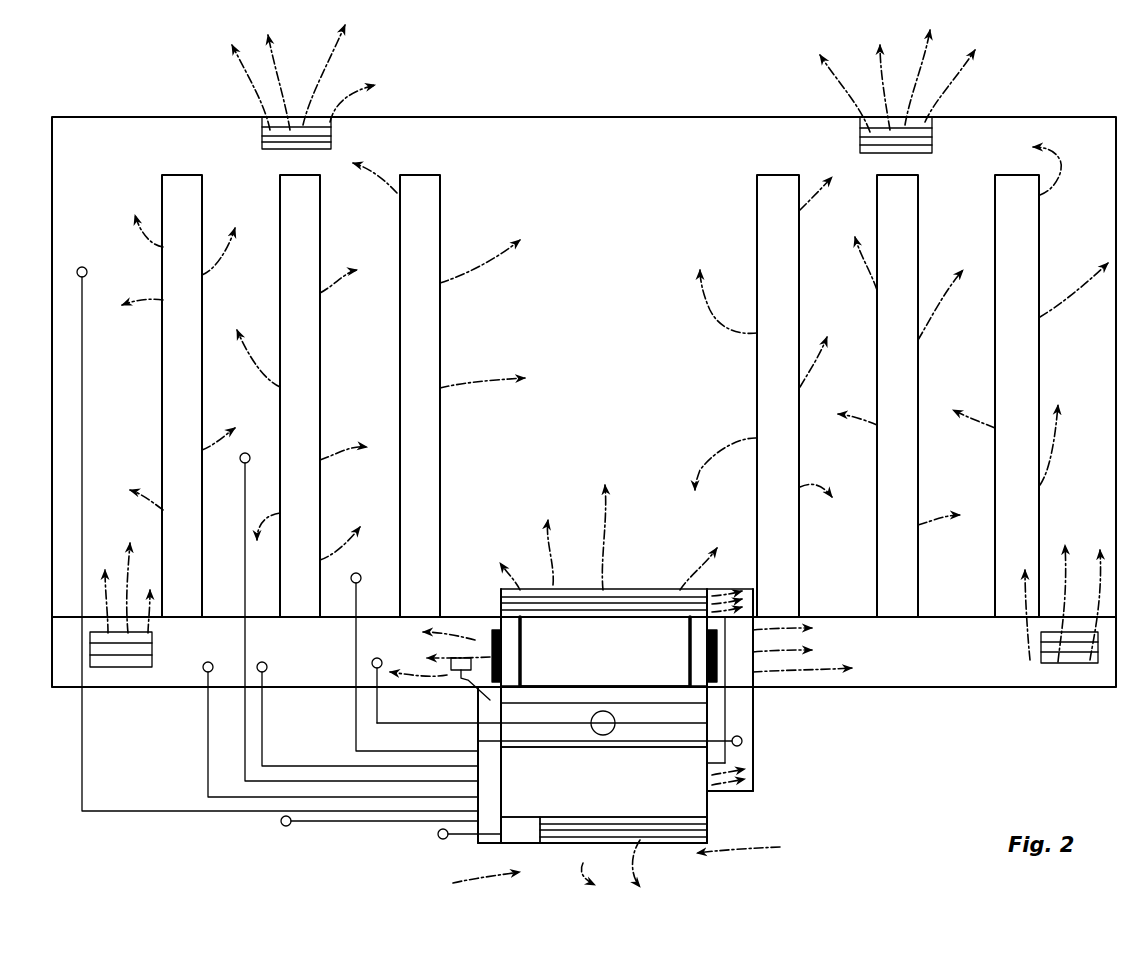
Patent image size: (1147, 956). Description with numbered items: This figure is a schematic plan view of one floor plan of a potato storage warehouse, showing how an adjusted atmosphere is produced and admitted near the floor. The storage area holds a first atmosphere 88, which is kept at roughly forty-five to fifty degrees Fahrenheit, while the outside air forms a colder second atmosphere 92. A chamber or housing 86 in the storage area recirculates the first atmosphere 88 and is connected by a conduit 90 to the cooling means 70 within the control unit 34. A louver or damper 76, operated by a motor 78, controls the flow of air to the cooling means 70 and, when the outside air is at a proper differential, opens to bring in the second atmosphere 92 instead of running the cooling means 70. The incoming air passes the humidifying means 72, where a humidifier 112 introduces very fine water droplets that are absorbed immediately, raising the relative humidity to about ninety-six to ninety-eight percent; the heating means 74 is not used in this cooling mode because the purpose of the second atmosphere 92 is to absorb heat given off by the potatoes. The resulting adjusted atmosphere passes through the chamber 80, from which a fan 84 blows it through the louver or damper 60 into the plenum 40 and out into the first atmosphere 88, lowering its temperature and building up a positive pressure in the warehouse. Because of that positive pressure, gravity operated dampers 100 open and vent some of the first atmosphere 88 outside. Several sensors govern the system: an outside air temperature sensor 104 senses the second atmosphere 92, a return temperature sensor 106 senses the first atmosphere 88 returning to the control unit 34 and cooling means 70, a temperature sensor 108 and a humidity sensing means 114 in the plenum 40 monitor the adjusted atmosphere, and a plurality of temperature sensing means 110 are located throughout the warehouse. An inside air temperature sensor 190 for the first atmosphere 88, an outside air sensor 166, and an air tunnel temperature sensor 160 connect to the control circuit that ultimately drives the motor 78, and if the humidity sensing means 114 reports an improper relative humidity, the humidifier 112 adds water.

The control unit 34 is at (476, 741).
The plenum 40 is at (955, 672).
The louver or damper 60 is at (490, 646).
The cooling means 70 is at (570, 797).
The humidifying means 72 is at (697, 739).
The heating means 74 is at (662, 703).
The louver or damper 76 is at (590, 843).
The motor 78 is at (515, 843).
The chamber 80 is at (665, 674).
The fan 84 is at (520, 645).
The chamber or housing 86 is at (632, 590).
The first atmosphere 88 is at (522, 452).
The conduit 90 is at (745, 770).
The second atmosphere 92 is at (916, 763).
The gravity operated dampers 100 is at (333, 128).
The outside air temperature sensor 104 is at (438, 834).
The return temperature sensor 106 is at (742, 741).
The temperature sensor 108 is at (377, 658).
The temperature sensing means 110 is at (105, 258).
The humidifier 112 is at (622, 712).
The humidity sensing means 114 is at (458, 680).
The air tunnel temperature sensor 160 is at (280, 648).
The outside air sensor 166 is at (281, 821).
The inside air temperature sensor 190 is at (206, 662).